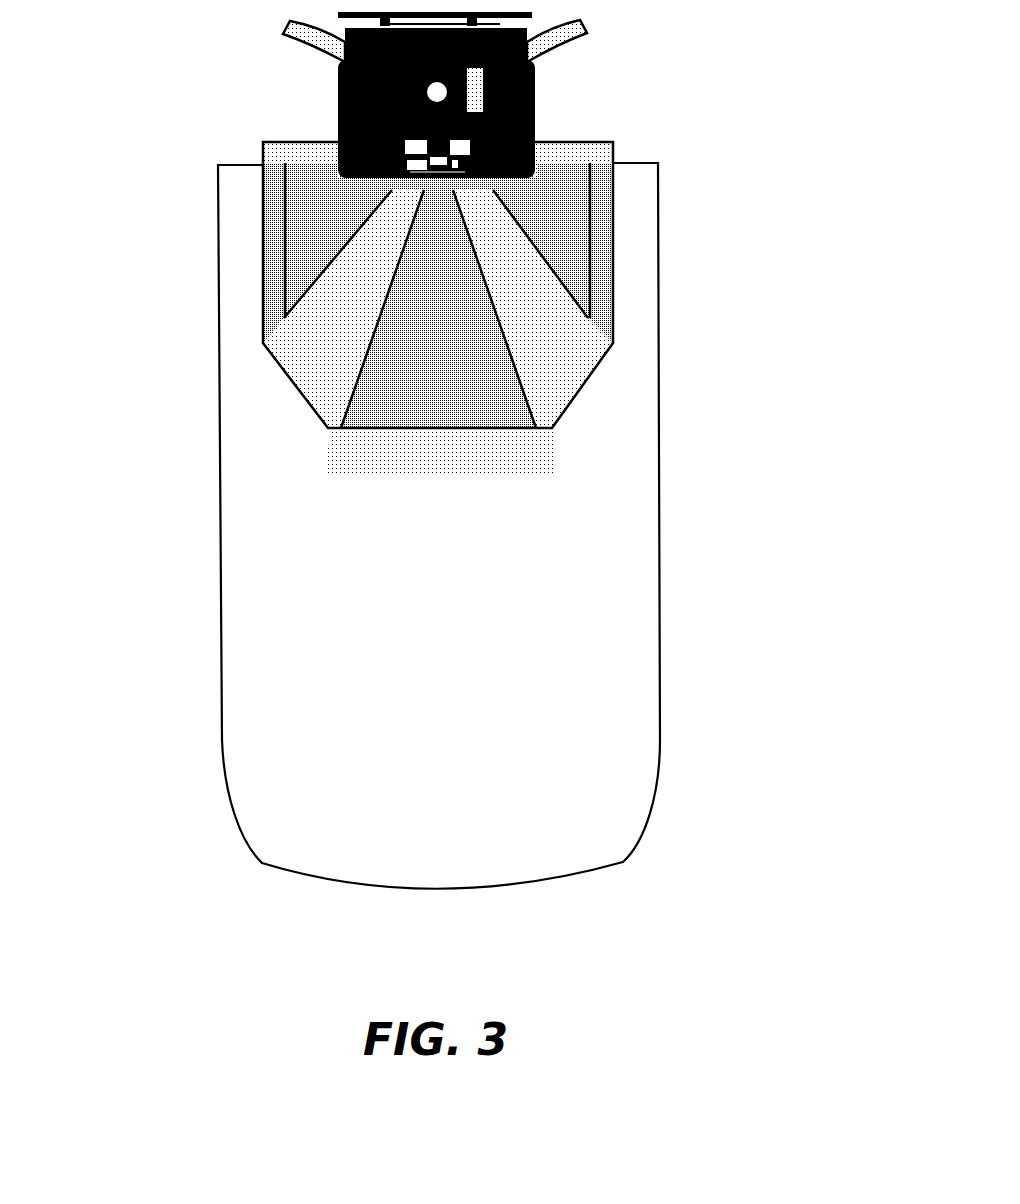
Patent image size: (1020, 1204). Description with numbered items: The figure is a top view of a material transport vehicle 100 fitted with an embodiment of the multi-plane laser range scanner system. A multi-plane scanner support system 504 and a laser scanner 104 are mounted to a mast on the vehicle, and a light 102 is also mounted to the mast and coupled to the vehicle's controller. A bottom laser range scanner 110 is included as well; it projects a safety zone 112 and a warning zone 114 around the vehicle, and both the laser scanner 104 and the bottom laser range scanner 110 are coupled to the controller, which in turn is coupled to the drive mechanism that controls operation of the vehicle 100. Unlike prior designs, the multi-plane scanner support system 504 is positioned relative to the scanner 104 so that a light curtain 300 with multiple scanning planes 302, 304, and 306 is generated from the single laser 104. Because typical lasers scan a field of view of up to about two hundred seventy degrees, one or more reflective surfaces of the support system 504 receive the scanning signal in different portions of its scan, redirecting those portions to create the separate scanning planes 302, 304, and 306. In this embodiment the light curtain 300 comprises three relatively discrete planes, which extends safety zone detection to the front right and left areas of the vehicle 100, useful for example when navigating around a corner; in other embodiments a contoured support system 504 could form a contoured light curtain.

The material transport vehicle 100 is at (417, 243).
The light 102 is at (320, 108).
The laser scanner 104 is at (368, 156).
The multi-plane scanner support system 504 is at (437, 156).
The bottom laser range scanner 110 is at (322, 200).
The safety zone 112 is at (335, 363).
The warning zone 114 is at (322, 686).
The light curtain 300 is at (423, 308).
The scanning plane 302 is at (448, 388).
The scanning plane 304 is at (300, 257).
The scanning plane 306 is at (575, 224).